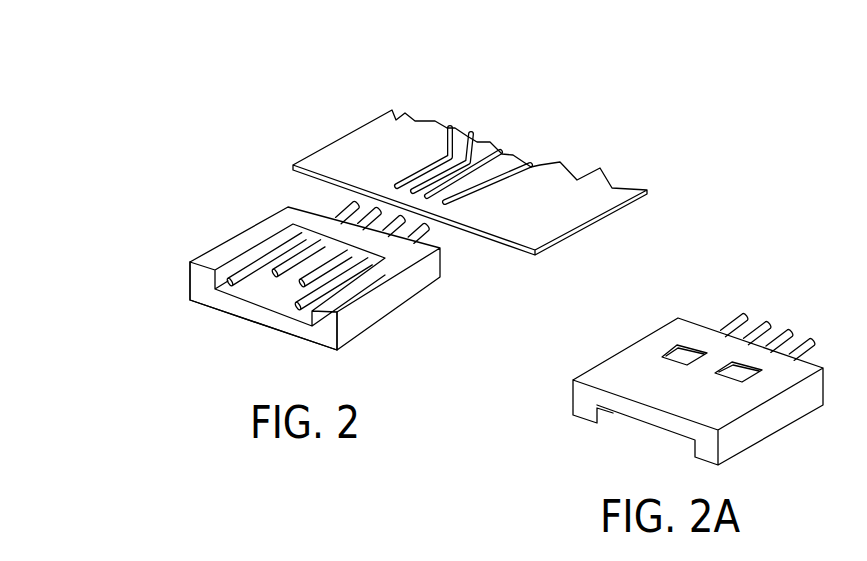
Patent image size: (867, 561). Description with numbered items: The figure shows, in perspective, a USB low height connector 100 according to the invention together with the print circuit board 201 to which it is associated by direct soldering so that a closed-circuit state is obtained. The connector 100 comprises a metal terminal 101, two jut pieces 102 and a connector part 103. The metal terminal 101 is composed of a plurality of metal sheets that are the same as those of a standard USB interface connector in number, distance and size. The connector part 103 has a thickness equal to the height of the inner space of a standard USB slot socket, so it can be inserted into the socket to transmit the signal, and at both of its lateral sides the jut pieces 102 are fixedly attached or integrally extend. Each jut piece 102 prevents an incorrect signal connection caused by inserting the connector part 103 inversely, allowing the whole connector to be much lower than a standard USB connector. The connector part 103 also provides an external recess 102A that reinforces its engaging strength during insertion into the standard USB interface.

In FIG. 2, the USB low height connector 100 is at (239, 205).
In FIG. 2, the metal terminal 101 is at (325, 270).
In FIG. 2, the jut piece 102 is at (246, 241).
In FIG. 2, the connector part 103 is at (245, 312).
In FIG. 2, the print circuit board 201 is at (412, 152).
In FIG. 2A, the external recess 102A is at (683, 357).